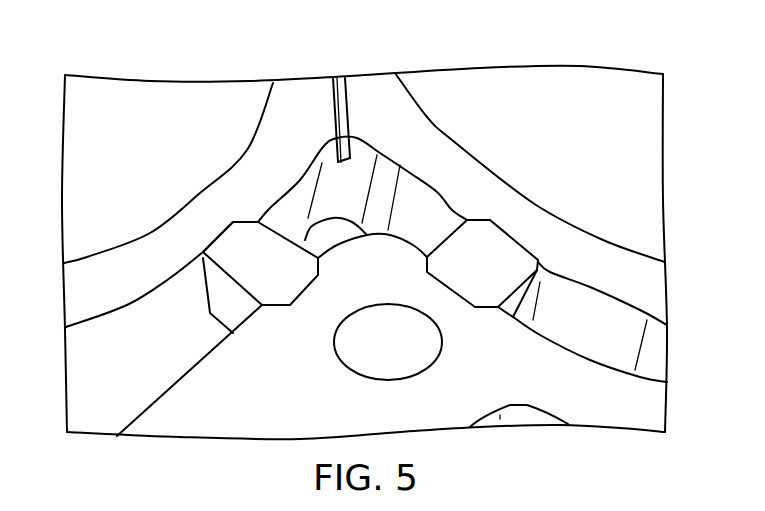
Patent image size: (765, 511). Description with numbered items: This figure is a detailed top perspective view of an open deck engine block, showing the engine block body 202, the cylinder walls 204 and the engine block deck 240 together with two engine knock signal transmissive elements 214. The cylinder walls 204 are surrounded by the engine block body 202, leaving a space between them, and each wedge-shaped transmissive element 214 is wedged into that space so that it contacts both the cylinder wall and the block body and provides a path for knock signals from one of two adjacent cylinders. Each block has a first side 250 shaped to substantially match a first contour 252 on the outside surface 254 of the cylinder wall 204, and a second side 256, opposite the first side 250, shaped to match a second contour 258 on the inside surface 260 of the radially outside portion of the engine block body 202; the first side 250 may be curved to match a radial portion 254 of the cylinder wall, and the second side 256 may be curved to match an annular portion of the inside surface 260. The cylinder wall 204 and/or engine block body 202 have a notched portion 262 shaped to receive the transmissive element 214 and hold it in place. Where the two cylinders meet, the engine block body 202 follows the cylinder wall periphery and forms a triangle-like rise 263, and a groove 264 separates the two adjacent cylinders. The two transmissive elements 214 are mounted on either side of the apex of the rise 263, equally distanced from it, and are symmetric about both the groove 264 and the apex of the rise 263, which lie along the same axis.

The engine block body 202 is at (355, 408).
The cylinder wall 204 is at (655, 283).
The pressure pulse transmissive element 214 is at (275, 272).
The engine block deck 240 is at (610, 413).
The first side 250 is at (216, 238).
The first contour 252 is at (203, 261).
The outside surface of the cylinder wall 254 is at (653, 318).
The second side 256 is at (291, 306).
The second contour 258 is at (305, 283).
The inside surface 260 is at (653, 374).
The notched portion 262 is at (517, 237).
The rise 263 is at (375, 250).
The groove 264 is at (337, 108).